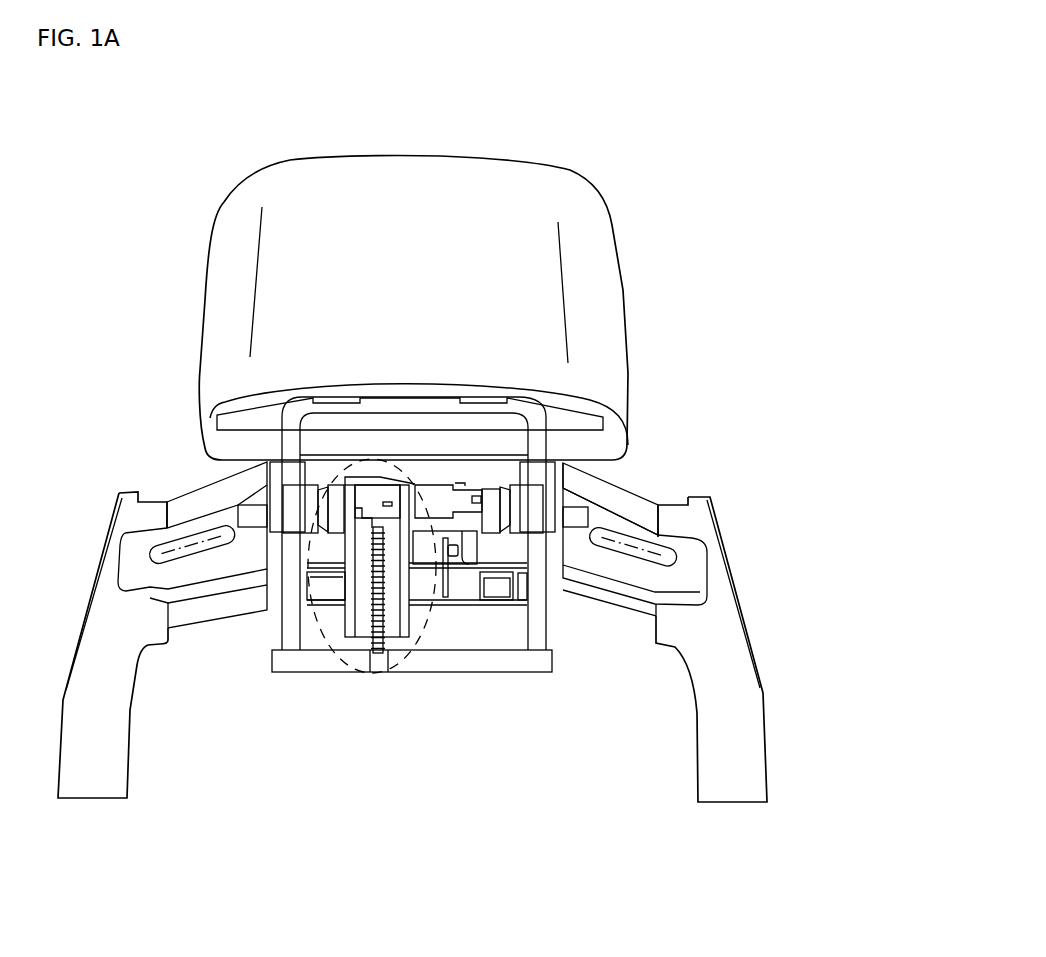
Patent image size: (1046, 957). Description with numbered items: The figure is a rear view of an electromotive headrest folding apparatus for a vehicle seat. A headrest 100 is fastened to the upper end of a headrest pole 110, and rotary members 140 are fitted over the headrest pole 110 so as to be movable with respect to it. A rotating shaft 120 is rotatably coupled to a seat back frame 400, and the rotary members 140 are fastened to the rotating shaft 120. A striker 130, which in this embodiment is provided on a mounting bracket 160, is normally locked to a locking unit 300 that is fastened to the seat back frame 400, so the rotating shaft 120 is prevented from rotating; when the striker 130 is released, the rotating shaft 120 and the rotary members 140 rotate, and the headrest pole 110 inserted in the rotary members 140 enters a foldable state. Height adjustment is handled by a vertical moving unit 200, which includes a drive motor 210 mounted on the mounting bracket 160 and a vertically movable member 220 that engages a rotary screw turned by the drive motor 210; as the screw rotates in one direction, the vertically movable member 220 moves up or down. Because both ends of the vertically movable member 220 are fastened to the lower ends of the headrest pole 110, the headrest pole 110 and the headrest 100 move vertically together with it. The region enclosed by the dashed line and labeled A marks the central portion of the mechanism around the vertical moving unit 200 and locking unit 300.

The headrest 100 is at (582, 250).
The headrest pole 110 is at (290, 627).
The rotating shaft 120 is at (577, 518).
The striker 130 is at (450, 600).
The rotary members 140 is at (290, 478).
The mounting bracket 160 is at (527, 502).
The vertical moving unit 200 is at (323, 640).
The drive motor 210 is at (440, 502).
The vertically movable member 220 is at (342, 663).
The locking unit 300 is at (463, 603).
The seat back frame 400 is at (721, 636).
The detail region A is at (418, 635).